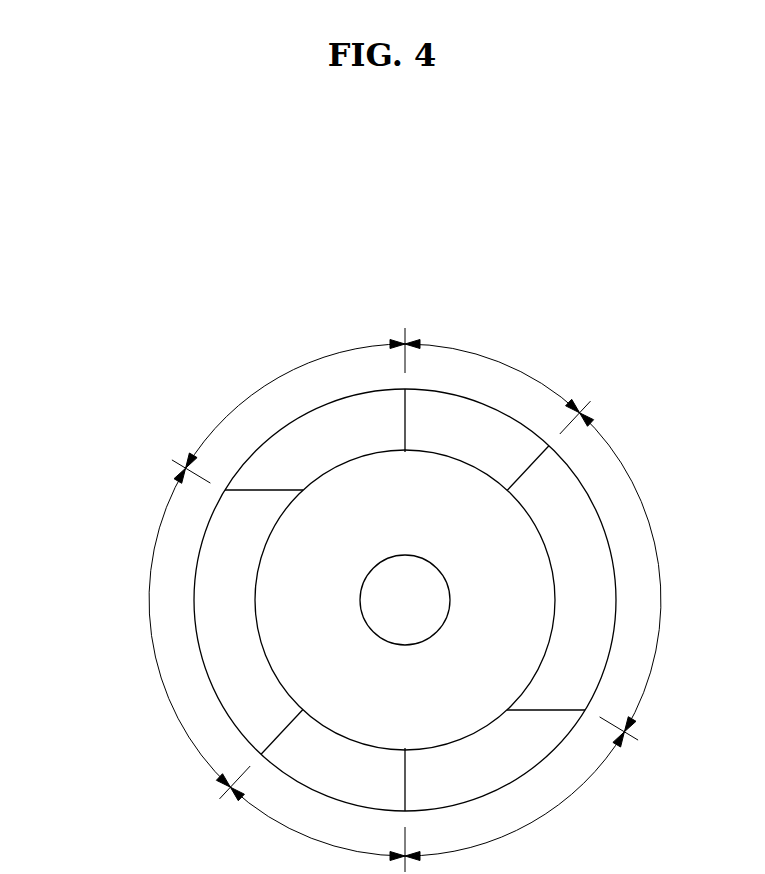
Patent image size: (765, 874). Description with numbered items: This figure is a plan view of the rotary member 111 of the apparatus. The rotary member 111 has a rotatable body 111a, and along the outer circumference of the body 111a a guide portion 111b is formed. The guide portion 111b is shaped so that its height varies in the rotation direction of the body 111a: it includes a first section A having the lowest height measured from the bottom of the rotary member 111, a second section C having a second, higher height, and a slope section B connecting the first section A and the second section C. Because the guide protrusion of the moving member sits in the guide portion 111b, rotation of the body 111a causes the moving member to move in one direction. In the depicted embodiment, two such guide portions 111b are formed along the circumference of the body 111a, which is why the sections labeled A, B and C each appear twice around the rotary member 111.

The rotary member 111 is at (474, 298).
The body 111a is at (370, 493).
The guide portion 111b is at (222, 600).